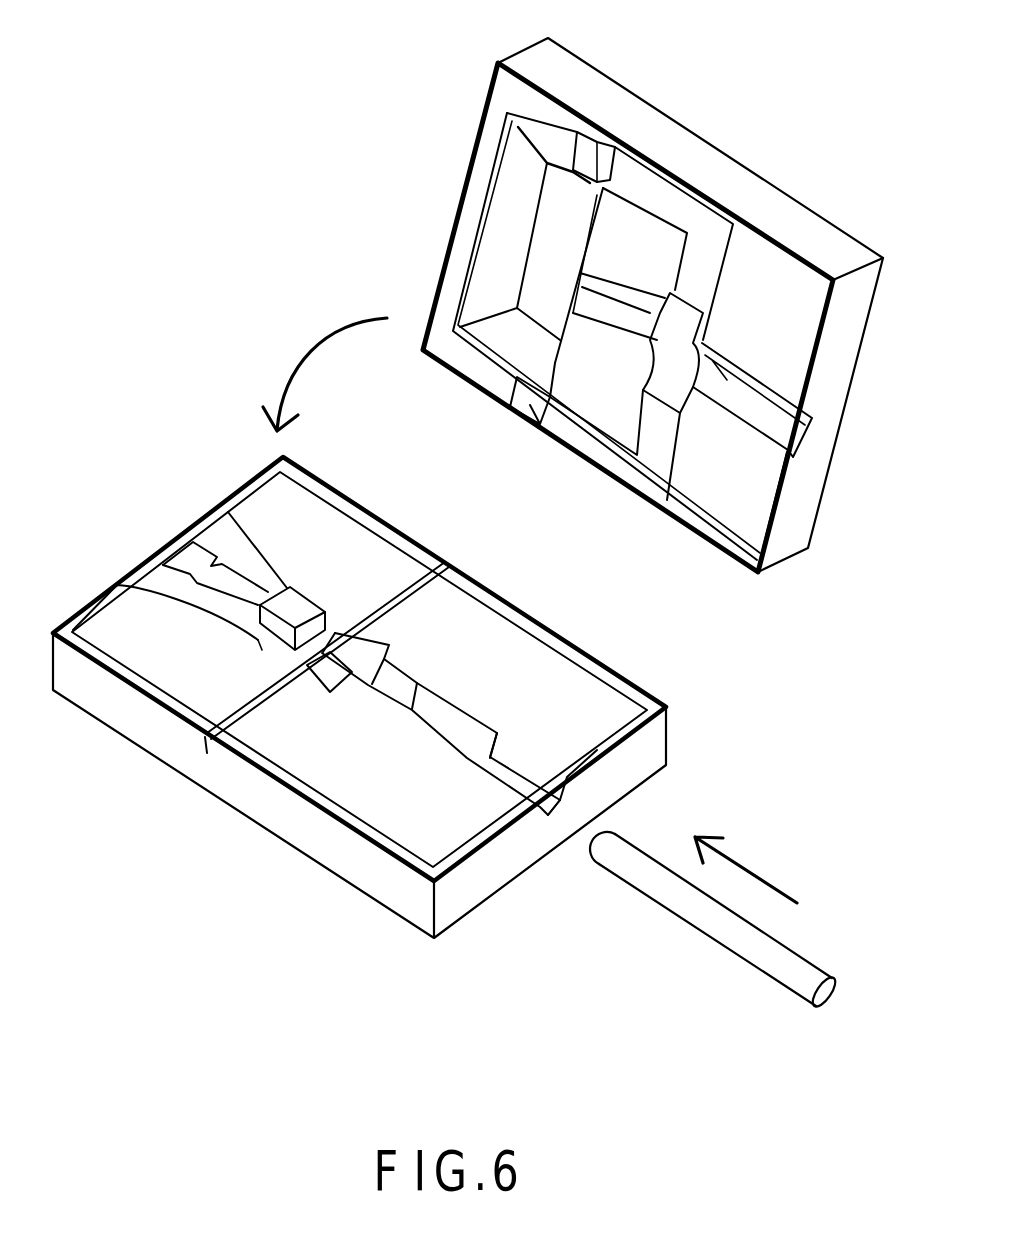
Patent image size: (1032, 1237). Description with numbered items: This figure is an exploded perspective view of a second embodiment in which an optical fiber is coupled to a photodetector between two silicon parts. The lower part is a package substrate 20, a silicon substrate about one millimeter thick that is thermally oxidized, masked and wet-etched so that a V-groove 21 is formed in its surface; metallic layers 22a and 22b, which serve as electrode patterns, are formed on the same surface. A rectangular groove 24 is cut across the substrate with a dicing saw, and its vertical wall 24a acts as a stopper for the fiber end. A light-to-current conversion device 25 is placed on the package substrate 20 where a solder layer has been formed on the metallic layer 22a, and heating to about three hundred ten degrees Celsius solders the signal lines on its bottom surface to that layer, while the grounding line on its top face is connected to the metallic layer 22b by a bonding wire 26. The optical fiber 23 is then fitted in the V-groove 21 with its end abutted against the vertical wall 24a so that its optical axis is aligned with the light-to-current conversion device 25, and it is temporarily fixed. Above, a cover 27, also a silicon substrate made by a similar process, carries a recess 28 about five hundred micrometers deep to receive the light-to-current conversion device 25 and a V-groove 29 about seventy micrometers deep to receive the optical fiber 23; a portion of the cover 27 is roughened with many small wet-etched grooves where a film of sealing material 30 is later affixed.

The package substrate 20 is at (140, 720).
The V-groove 21 is at (530, 770).
The metallic layer 22a is at (183, 557).
The metallic layer 22b is at (128, 622).
The optical fiber 23 is at (713, 915).
The rectangular groove 24 is at (337, 633).
The vertical wall 24a is at (332, 642).
The light-to-current conversion device 25 is at (297, 602).
The bonding wire 26 is at (262, 652).
The cover 27 is at (795, 226).
The recess 28 is at (502, 262).
The V-groove 29 is at (773, 430).
The film of sealing material 30 is at (538, 112).